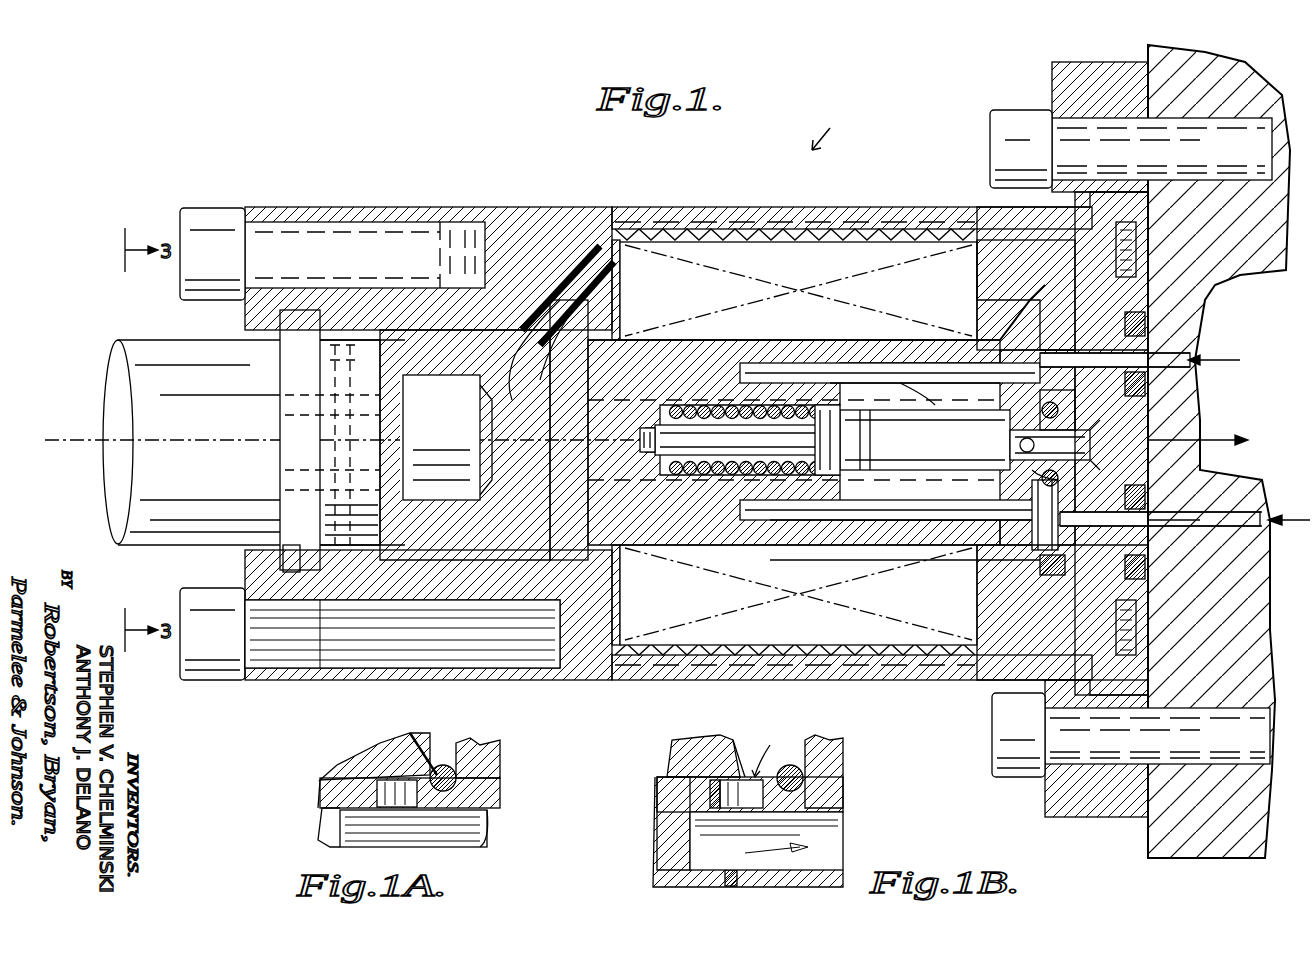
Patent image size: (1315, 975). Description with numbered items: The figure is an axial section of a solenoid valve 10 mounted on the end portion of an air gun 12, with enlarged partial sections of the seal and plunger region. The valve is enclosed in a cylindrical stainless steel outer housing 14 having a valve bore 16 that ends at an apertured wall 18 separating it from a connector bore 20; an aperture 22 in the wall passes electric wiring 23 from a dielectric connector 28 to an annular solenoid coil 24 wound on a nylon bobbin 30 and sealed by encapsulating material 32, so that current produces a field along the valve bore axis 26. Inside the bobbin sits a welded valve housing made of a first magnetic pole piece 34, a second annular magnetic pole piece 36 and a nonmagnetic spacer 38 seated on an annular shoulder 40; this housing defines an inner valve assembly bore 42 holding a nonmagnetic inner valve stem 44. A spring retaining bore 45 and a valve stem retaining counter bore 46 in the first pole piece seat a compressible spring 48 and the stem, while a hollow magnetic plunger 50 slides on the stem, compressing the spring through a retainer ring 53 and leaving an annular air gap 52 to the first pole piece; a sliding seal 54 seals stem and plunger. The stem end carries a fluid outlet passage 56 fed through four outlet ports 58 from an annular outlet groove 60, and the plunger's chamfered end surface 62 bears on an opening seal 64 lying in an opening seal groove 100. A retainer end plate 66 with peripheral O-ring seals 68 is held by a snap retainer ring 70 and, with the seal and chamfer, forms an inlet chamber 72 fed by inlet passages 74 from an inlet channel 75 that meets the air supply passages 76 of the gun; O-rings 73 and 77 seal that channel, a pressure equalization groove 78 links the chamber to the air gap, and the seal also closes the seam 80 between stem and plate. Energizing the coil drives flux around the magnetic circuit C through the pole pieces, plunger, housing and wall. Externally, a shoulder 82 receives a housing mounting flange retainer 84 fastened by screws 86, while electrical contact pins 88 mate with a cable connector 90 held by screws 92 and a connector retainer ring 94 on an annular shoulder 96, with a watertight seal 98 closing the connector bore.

In FIG. 1, the solenoid valve 10 is at (830, 128).
In FIG. 1, the air gun 12 is at (1150, 838).
In FIG. 1, the outer housing 14 is at (822, 212).
In FIG. 1, the valve bore 16 is at (1135, 630).
In FIG. 1, the apertured wall 18 is at (562, 560).
In FIG. 1, the connector bore 20 is at (285, 552).
In FIG. 1, the aperture 22 is at (530, 260).
In FIG. 1, the electric wiring 23 is at (570, 260).
In FIG. 1, the solenoid coil 24 is at (820, 660).
In FIG. 1, the valve bore axis 26 is at (92, 444).
In FIG. 1, the connector 28 is at (445, 413).
In FIG. 1, the bobbin 30 is at (965, 595).
In FIG. 1, the encapsulating material 32 is at (588, 220).
In FIG. 1, the first magnetic pole piece 34 is at (628, 520).
In FIG. 1, the second annular magnetic pole piece 36 is at (990, 240).
In FIG. 1, the nonmagnetic spacer 38 is at (862, 338).
In FIG. 1, the annular shoulder 40 is at (718, 400).
In FIG. 1, the inner valve assembly bore 42 is at (1030, 545).
In FIG. 1, the inner valve stem 44 is at (910, 444).
In FIG. 1A, the inner valve stem 44 is at (345, 795).
In FIG. 1B, the inner valve stem 44 is at (668, 804).
In FIG. 1, the spring retaining bore 45 is at (700, 408).
In FIG. 1, the valve stem retaining counter bore 46 is at (690, 470).
In FIG. 1, the compressible spring 48 is at (660, 425).
In FIG. 1, the magnetic plunger 50 is at (845, 512).
In FIG. 1A, the magnetic plunger 50 is at (362, 755).
In FIG. 1B, the magnetic plunger 50 is at (700, 750).
In FIG. 1, the annular air gap 52 is at (775, 365).
In FIG. 1, the retainer ring 53 is at (780, 505).
In FIG. 1, the sliding seal 54 is at (836, 383).
In FIG. 1, the fluid outlet passage 56 is at (1074, 453).
In FIG. 1A, the fluid outlet passage 56 is at (490, 830).
In FIG. 1B, the fluid outlet passage 56 is at (846, 828).
In FIG. 1, the outlet ports 58 is at (1040, 555).
In FIG. 1B, the outlet ports 58 is at (700, 775).
In FIG. 1, the outlet groove 60 is at (1045, 560).
In FIG. 1A, the outlet groove 60 is at (480, 847).
In FIG. 1B, the outlet groove 60 is at (735, 752).
In FIG. 1, the chamfered end surface 62 is at (1000, 330).
In FIG. 1A, the chamfered end surface 62 is at (428, 735).
In FIG. 1, the opening seal 64 is at (1050, 560).
In FIG. 1A, the opening seal 64 is at (446, 765).
In FIG. 1B, the opening seal 64 is at (805, 755).
In FIG. 1, the retainer end plate 66 is at (1190, 330).
In FIG. 1, the peripheral O-ring seals 68 is at (1010, 240).
In FIG. 1, the snap retainer ring 70 is at (1138, 240).
In FIG. 1, the inlet chamber 72 is at (1070, 565).
In FIG. 1, the O-ring 73 is at (1150, 590).
In FIG. 1, the inlet passages 74 is at (1145, 325).
In FIG. 1, the inlet channel 75 is at (1230, 470).
In FIG. 1, the air supply passages 76 is at (1185, 372).
In FIG. 1, the O-ring 77 is at (1160, 485).
In FIG. 1, the pressure equalization groove 78 is at (910, 360).
In FIG. 1, the seam 80 is at (1085, 398).
In FIG. 1A, the seam 80 is at (502, 755).
In FIG. 1B, the seam 80 is at (845, 770).
In FIG. 1, the shoulder 82 is at (1132, 200).
In FIG. 1, the housing mounting flange retainer 84 is at (1062, 67).
In FIG. 1, the screws 86 is at (1005, 110).
In FIG. 1, the electrical contact pins 88 is at (285, 405).
In FIG. 1, the cable connector 90 is at (150, 340).
In FIG. 1, the screws 92 is at (208, 210).
In FIG. 1, the connector retainer ring 94 is at (295, 210).
In FIG. 1, the annular shoulder 96 is at (290, 388).
In FIG. 1, the watertight seal 98 is at (330, 350).
In FIG. 1A, the opening seal groove 100 is at (480, 790).
In FIG. 1B, the opening seal groove 100 is at (845, 792).
In FIG. 1, the magnetic circuit C is at (662, 212).